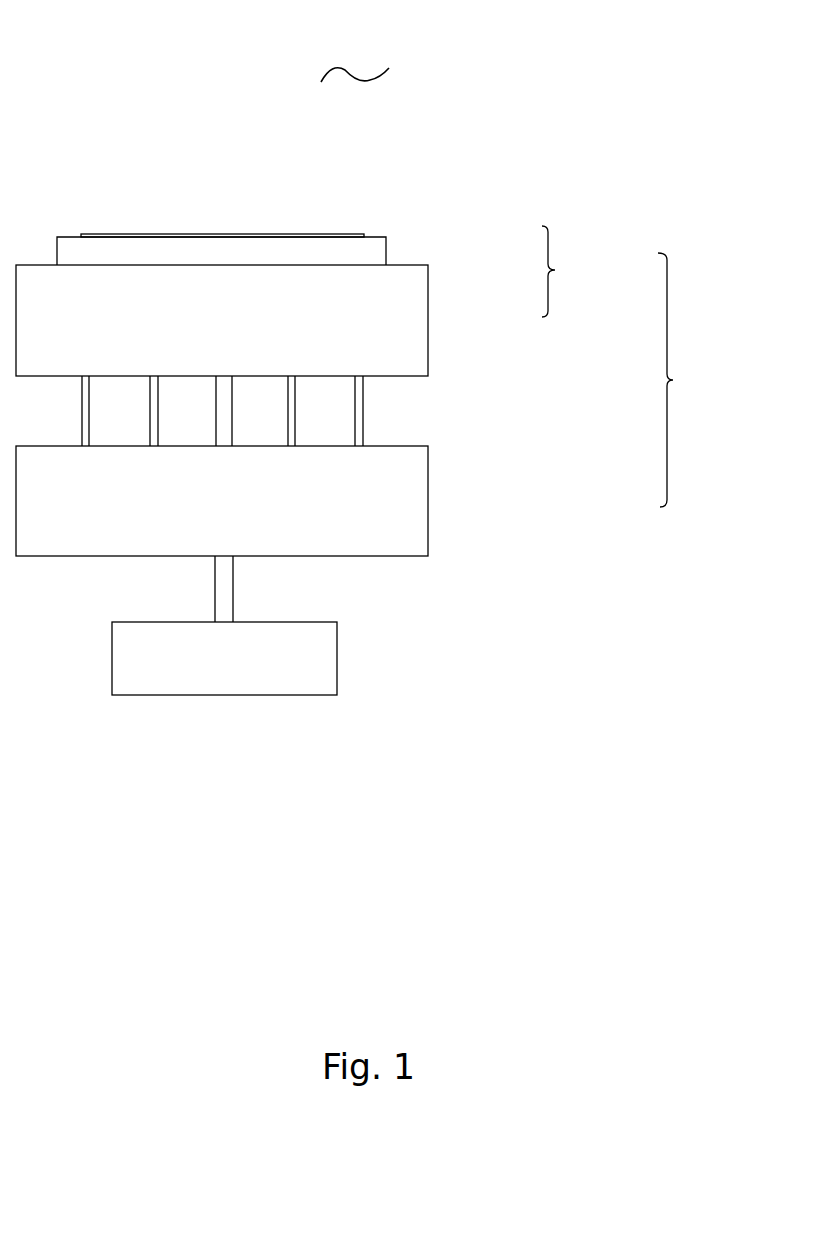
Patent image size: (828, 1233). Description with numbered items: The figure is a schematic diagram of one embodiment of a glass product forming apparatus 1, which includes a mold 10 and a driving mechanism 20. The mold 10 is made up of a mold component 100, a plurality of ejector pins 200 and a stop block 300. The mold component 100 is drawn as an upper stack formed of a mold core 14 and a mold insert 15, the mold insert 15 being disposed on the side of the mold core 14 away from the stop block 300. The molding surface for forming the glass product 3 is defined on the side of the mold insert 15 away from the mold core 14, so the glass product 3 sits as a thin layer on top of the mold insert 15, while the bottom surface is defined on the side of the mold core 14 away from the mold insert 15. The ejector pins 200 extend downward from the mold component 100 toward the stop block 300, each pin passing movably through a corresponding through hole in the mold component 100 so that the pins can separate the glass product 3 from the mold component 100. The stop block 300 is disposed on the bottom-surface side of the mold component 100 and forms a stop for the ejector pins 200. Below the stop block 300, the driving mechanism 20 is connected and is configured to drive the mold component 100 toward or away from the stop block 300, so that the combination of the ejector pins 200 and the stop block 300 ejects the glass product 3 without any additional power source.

The glass product forming apparatus 1 is at (355, 42).
The mold 10 is at (693, 380).
The mold component 100 is at (586, 271).
The mold core 14 is at (363, 333).
The mold insert 15 is at (367, 255).
The glass product 3 is at (333, 237).
The ejector pins 200 is at (360, 420).
The stop block 300 is at (358, 517).
The driving mechanism 20 is at (244, 683).